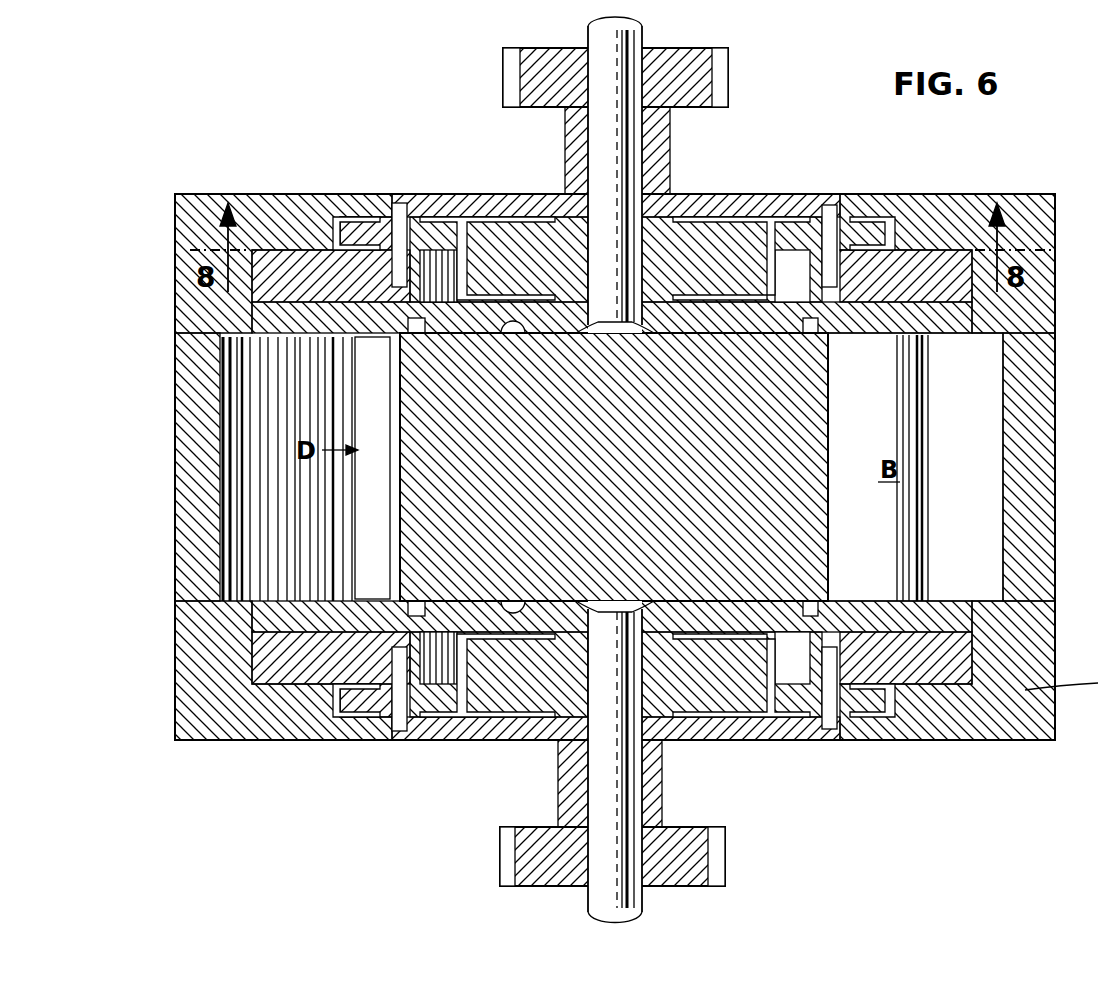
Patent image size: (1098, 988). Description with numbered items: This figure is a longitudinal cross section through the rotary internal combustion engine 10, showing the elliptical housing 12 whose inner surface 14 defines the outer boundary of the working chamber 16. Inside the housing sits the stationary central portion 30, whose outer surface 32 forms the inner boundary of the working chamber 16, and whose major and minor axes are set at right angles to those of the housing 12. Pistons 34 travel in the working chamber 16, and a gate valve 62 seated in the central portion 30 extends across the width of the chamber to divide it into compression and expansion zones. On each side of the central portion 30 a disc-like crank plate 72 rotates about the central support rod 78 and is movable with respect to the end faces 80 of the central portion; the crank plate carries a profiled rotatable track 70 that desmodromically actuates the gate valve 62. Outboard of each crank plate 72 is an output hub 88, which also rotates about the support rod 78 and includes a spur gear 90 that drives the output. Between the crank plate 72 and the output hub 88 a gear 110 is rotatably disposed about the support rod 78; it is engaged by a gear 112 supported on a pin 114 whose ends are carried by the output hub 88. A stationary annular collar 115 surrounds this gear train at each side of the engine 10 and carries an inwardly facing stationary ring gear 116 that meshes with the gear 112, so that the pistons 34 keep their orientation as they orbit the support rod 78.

The internal combustion engine 10 is at (288, 190).
The elliptical housing 12 is at (188, 432).
The elliptical inner surface 14 is at (1003, 455).
The working chamber 16 is at (981, 486).
The central portion 30 is at (629, 464).
The outer surface 32 is at (830, 540).
The piston 34 is at (940, 537).
The gate valve 62 is at (365, 505).
The rotatable track 70 is at (405, 338).
The crank plate 72 is at (898, 340).
The support rod 78 is at (600, 150).
The end face 80 is at (508, 325).
The output hub 88 is at (508, 207).
The spur gear 90 is at (520, 50).
The gear 110 is at (720, 240).
The gear 112 is at (458, 222).
The pin 114 is at (397, 206).
The annular collar 115 is at (190, 212).
The ring gear 116 is at (338, 218).